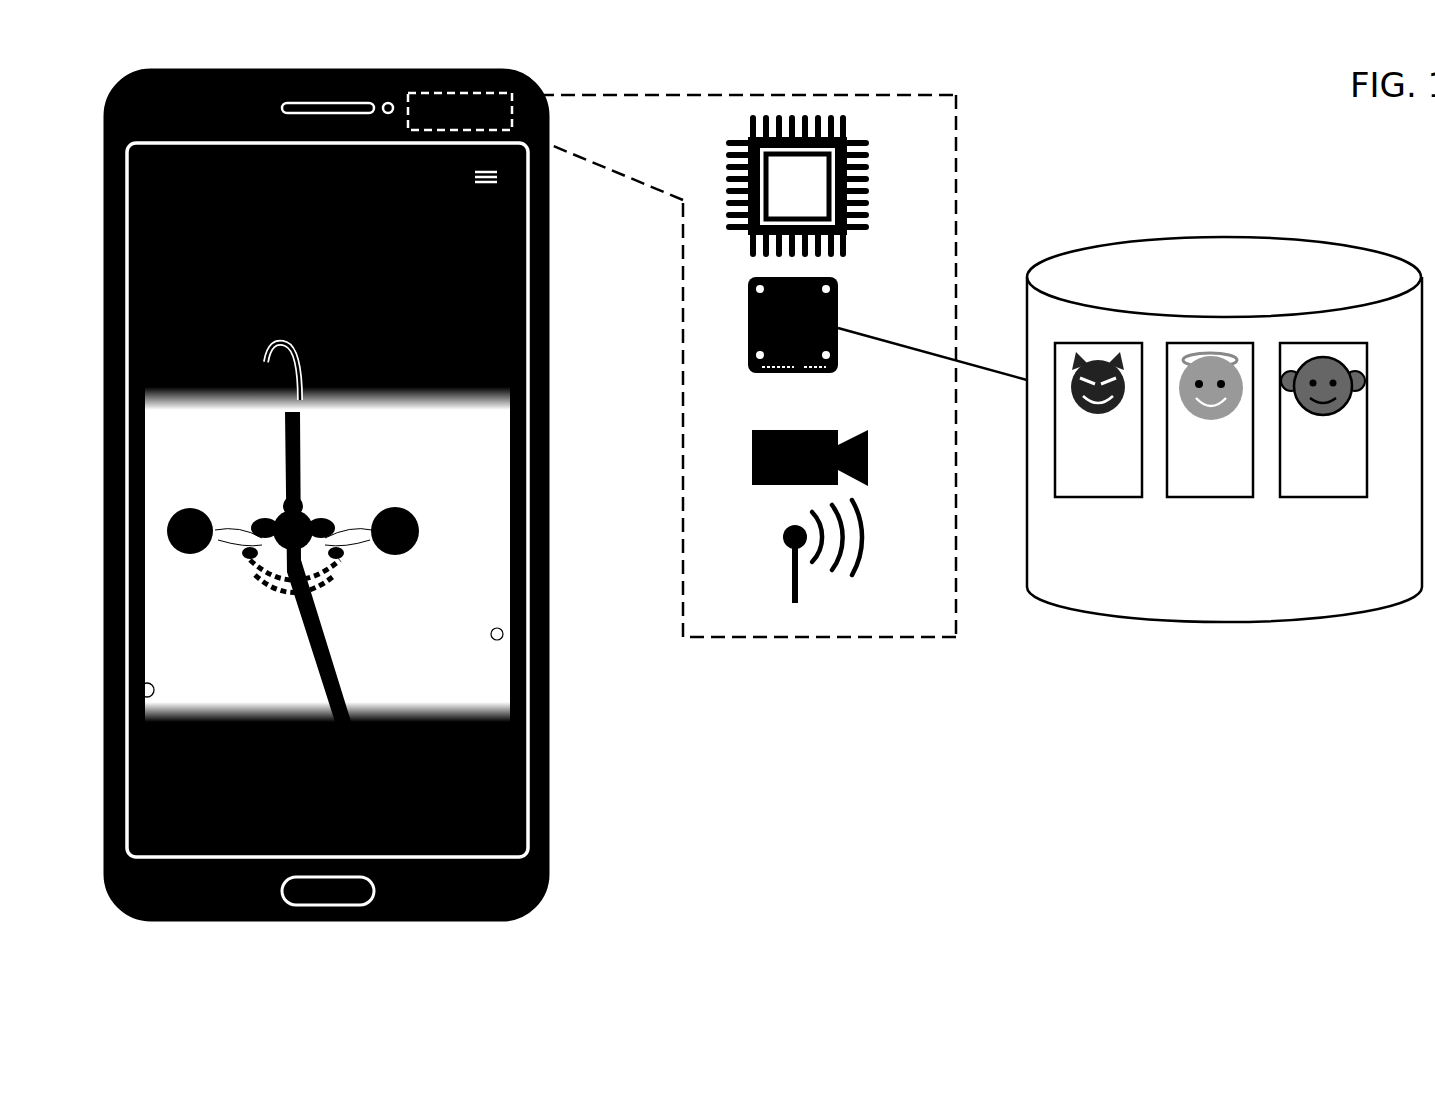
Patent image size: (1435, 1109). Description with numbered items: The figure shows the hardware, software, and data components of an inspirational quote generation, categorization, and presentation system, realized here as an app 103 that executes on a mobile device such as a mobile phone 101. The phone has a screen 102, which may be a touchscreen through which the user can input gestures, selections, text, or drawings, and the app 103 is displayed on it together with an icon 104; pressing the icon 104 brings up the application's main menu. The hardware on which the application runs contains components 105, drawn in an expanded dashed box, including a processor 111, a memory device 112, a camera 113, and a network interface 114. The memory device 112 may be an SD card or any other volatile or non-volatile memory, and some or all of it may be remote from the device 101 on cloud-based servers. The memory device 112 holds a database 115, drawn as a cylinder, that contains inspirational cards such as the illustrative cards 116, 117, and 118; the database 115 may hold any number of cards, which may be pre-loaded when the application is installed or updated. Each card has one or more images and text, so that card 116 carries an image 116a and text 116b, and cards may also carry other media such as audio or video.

The mobile phone 101 is at (356, 527).
The screen 102 is at (356, 500).
The app 103 is at (461, 539).
The icon 104 is at (487, 188).
The components 105 is at (965, 120).
The processor 111 is at (852, 187).
The memory device 112 is at (837, 360).
The camera 113 is at (868, 453).
The network interface 114 is at (787, 527).
The database 115 is at (1258, 620).
The card 116 is at (1112, 457).
The image 116a is at (1100, 357).
The text 116b is at (1120, 478).
The card 117 is at (1210, 497).
The card 118 is at (1322, 497).